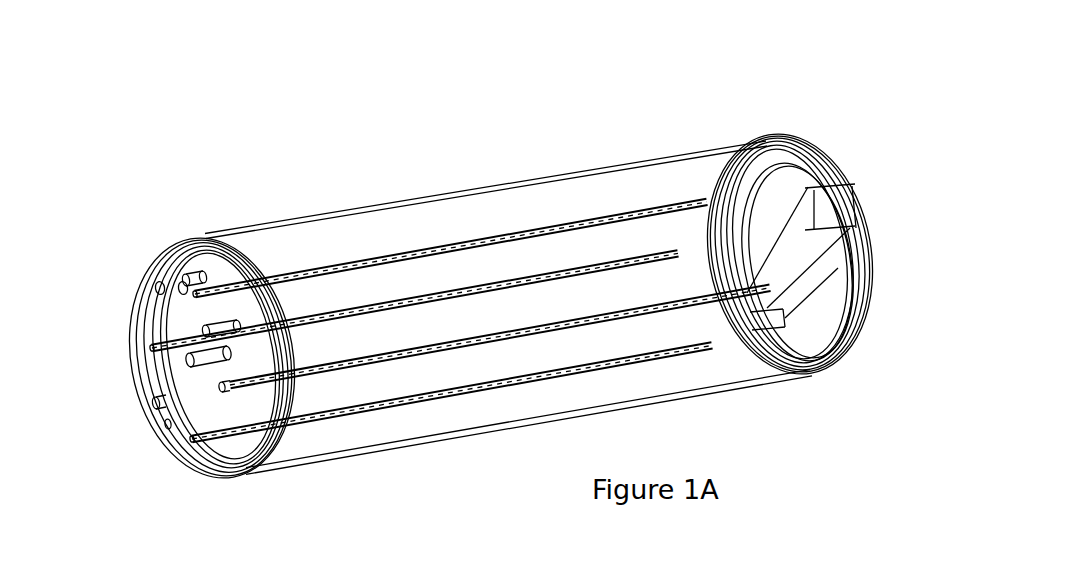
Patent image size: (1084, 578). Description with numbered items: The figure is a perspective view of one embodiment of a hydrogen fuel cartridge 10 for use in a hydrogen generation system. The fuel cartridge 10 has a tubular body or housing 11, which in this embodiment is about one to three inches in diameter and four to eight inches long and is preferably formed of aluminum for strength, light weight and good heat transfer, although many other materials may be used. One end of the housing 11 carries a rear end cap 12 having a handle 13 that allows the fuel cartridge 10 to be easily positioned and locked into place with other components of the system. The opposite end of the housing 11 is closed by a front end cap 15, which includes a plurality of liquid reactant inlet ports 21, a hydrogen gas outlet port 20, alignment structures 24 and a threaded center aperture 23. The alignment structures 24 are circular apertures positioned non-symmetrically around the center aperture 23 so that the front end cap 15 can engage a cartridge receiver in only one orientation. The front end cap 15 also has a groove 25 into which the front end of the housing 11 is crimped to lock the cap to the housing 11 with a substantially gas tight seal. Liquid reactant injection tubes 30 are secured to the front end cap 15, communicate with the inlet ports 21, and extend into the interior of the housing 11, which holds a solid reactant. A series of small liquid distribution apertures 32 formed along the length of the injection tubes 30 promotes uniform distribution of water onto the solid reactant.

The fuel cartridge 10 is at (700, 133).
The tubular body or housing 11 is at (541, 178).
The rear end cap 12 is at (857, 190).
The handle 13 is at (822, 284).
The front end cap 15 is at (163, 272).
The hydrogen gas outlet port 20 is at (156, 290).
The liquid reactant inlet ports 21 is at (197, 296).
The threaded center aperture 23 is at (184, 365).
The alignment structures 24 is at (151, 397).
The groove 25 is at (212, 244).
The liquid reactant injection tubes 30 is at (356, 308).
The liquid distribution apertures 32 is at (622, 312).